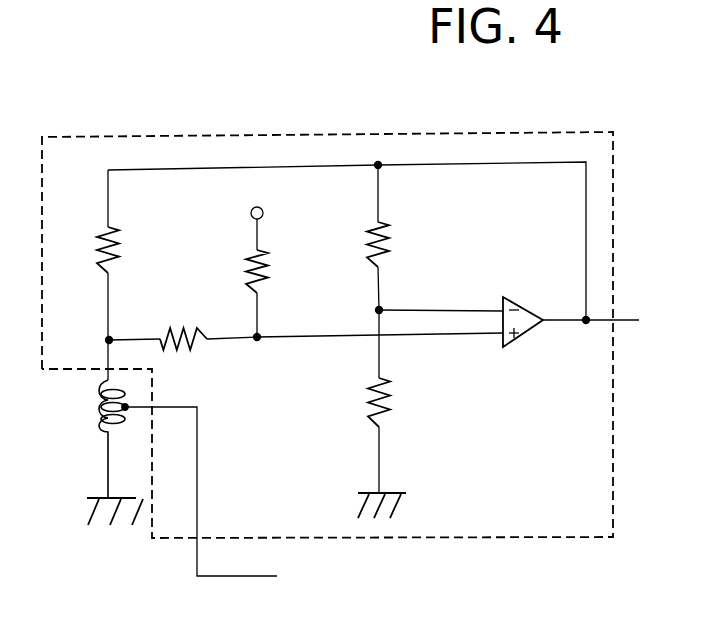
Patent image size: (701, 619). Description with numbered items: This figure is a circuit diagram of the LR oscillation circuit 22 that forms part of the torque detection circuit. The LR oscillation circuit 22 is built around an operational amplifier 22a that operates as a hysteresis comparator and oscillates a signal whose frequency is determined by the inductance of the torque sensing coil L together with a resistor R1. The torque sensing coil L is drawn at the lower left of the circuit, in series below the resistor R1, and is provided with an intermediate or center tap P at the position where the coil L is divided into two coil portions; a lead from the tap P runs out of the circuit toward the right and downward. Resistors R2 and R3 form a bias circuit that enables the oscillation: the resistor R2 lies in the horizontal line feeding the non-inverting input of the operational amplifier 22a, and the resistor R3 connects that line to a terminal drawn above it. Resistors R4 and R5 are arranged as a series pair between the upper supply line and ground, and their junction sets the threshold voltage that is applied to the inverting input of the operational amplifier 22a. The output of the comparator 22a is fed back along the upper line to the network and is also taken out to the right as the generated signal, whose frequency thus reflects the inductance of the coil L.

The LR oscillation circuit 22 is at (304, 136).
The operational amplifier 22a is at (518, 296).
The resistor R1 is at (92, 250).
The resistor R2 is at (183, 324).
The resistor R3 is at (241, 272).
The resistor R4 is at (362, 244).
The resistor R5 is at (364, 402).
The torque sensing coil L is at (102, 439).
The intermediate tap P is at (126, 409).